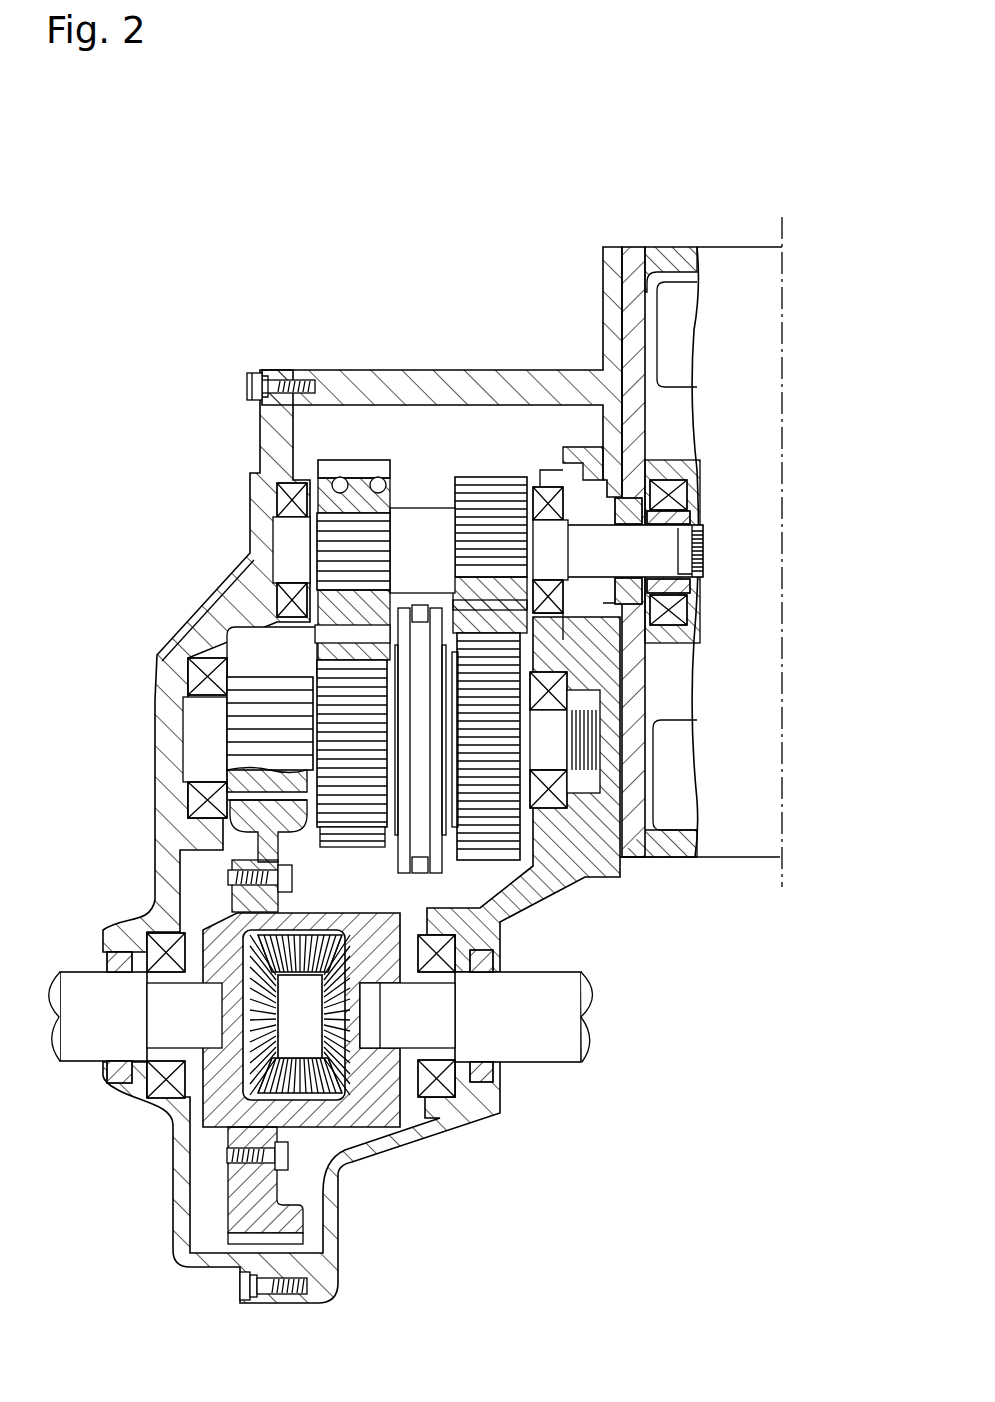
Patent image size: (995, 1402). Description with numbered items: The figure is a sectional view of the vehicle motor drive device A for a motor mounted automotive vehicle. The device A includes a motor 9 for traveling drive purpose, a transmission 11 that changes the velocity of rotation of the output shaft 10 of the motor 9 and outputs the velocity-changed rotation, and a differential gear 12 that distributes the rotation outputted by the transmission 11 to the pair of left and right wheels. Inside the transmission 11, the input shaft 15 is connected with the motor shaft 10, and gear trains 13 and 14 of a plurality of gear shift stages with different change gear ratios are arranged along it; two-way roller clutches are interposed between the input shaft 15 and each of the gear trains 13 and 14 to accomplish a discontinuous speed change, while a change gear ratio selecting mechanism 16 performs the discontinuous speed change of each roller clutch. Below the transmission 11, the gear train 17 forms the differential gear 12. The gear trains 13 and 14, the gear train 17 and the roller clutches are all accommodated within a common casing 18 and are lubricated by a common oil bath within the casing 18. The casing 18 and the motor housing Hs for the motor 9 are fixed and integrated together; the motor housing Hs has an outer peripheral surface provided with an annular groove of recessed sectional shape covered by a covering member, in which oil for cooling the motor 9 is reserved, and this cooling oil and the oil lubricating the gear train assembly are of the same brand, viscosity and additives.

The motor 9 is at (749, 306).
The motor housing Hs is at (657, 262).
The output shaft 10 is at (709, 508).
The transmission 11 is at (463, 357).
The differential gear 12 is at (195, 1109).
The gear train 13 is at (508, 458).
The gear train 14 is at (359, 444).
The input shaft 15 is at (413, 516).
The change gear ratio selecting mechanism 16 is at (444, 893).
The gear train 17 is at (312, 1109).
The casing 18 is at (262, 432).
The vehicle motor drive device A is at (289, 353).